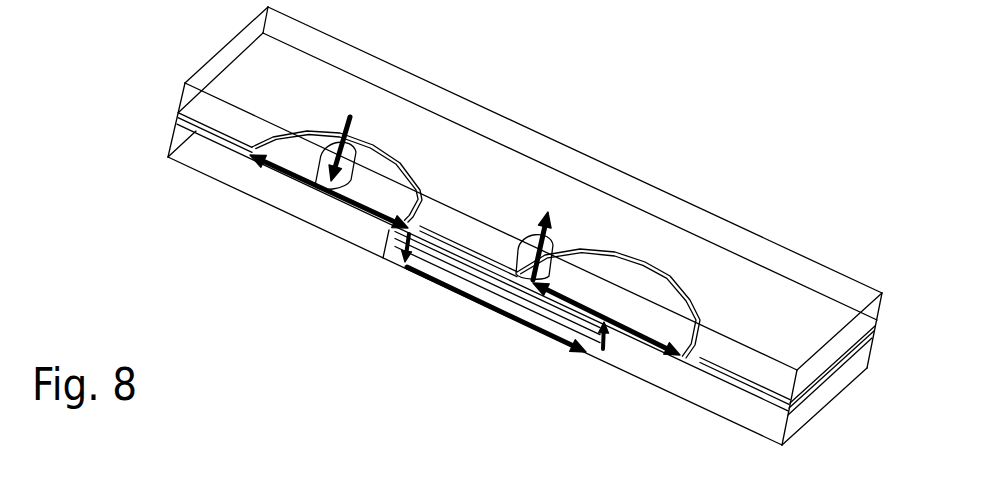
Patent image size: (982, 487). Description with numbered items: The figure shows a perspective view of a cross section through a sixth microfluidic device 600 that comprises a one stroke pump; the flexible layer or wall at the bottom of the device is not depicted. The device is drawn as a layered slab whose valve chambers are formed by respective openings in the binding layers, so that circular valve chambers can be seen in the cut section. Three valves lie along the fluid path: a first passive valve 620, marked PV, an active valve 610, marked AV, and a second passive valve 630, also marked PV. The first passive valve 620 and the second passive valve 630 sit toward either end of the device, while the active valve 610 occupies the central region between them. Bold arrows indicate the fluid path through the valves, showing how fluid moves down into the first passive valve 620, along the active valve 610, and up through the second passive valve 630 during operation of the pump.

The microfluidic device 600 is at (188, 246).
The active valve 610 is at (458, 315).
The first passive valve 620 is at (362, 188).
The second passive valve 630 is at (648, 313).